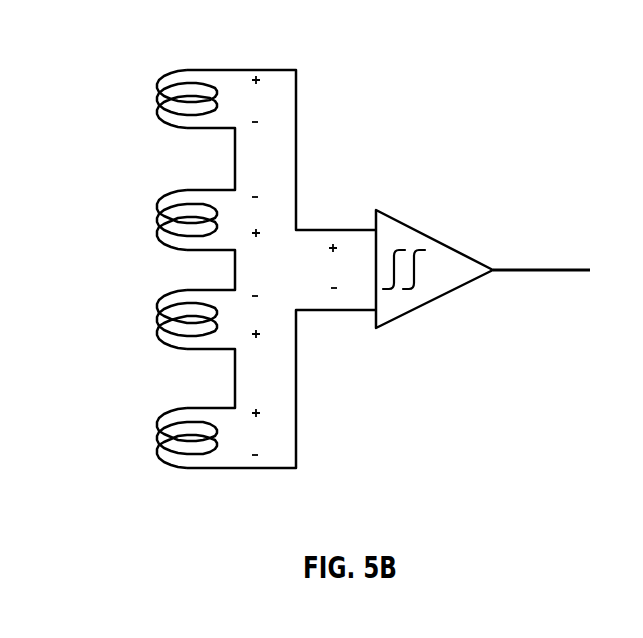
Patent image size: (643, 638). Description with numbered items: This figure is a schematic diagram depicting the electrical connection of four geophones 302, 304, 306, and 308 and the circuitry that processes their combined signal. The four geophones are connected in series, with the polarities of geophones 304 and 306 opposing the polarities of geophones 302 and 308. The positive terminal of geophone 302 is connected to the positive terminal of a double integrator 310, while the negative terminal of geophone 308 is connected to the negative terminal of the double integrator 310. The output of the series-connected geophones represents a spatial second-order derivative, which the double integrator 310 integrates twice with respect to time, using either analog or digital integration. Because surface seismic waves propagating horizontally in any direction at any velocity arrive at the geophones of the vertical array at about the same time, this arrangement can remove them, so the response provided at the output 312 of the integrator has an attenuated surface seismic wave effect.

The geophone 302 is at (157, 100).
The geophone 304 is at (157, 220).
The geophone 306 is at (157, 317).
The geophone 308 is at (157, 437).
The double integrator 310 is at (440, 236).
The output 312 is at (533, 267).